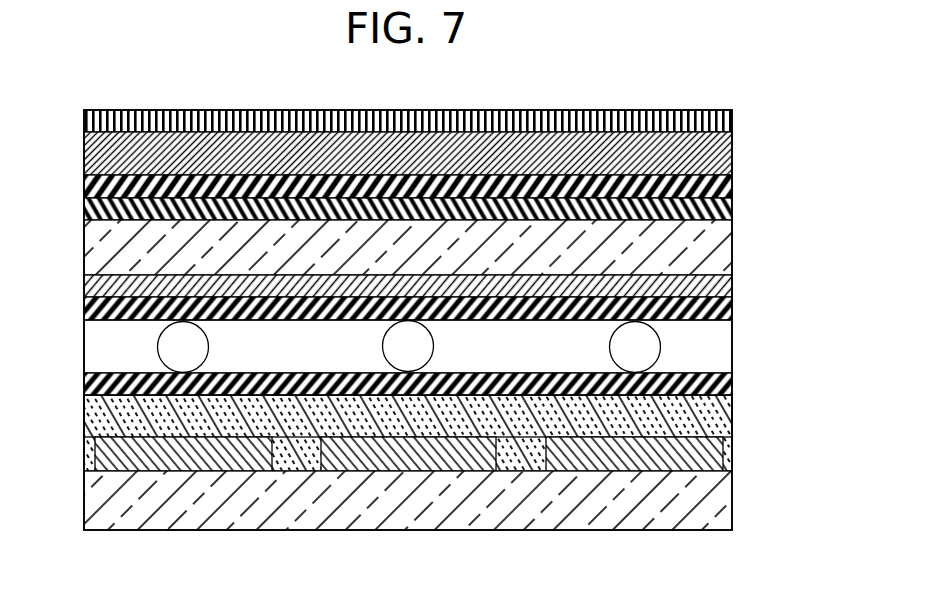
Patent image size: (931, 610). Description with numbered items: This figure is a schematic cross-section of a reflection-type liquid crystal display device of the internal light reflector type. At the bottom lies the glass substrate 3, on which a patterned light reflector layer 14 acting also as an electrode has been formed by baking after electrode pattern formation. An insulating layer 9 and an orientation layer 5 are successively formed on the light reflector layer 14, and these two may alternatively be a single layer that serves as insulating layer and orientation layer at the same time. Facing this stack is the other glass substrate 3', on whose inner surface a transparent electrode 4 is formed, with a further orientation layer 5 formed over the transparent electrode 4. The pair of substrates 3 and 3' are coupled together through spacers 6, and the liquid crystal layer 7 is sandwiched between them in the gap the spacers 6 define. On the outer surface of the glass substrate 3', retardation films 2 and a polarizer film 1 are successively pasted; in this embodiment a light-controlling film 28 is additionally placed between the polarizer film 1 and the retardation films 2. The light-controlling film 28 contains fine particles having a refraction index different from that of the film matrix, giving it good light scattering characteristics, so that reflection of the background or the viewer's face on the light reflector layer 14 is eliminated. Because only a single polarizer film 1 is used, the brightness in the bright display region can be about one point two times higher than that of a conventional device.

The polarizer film 1 is at (733, 118).
The light-controlling film 28 is at (733, 155).
The retardation films 2 is at (733, 186).
The glass substrate 3' is at (440, 247).
The transparent electrode 4 is at (733, 279).
The orientation layer 5 is at (733, 305).
The spacers 6 is at (650, 340).
The liquid crystal layer 7 is at (722, 354).
The insulating layer 9 is at (727, 422).
The light reflector layer 14 is at (176, 467).
The glass substrate 3 is at (420, 528).